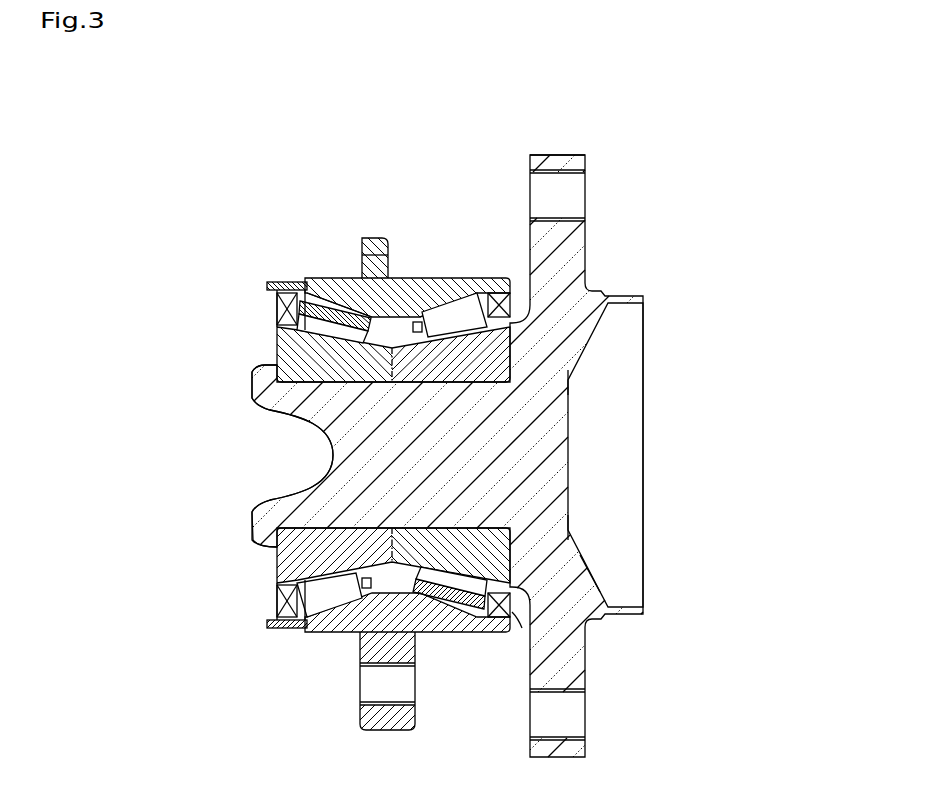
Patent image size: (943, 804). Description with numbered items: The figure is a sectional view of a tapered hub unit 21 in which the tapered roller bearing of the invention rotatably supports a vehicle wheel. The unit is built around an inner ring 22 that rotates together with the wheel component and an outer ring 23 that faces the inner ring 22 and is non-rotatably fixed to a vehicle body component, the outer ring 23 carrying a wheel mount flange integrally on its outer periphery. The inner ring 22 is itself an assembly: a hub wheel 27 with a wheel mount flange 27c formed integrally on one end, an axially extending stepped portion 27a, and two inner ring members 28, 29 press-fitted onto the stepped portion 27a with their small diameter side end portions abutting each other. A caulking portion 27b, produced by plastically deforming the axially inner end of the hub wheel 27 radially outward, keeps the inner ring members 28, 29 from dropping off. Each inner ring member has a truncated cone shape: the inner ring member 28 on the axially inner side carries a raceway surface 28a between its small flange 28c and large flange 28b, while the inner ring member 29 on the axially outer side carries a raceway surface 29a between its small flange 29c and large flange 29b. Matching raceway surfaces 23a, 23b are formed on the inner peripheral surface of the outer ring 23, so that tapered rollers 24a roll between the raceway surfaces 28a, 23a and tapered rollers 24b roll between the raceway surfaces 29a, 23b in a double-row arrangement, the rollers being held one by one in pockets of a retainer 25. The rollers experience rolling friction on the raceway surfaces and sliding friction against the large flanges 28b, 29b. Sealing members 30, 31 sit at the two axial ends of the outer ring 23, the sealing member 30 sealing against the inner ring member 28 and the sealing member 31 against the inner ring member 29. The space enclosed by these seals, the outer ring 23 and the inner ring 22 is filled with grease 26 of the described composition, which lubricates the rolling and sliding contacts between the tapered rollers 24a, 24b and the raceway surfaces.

The tapered hub unit 21 is at (240, 212).
The inner ring 22 is at (590, 248).
The outer ring 23 is at (446, 275).
The raceway surface 23a is at (320, 277).
The raceway surface 23b is at (427, 314).
The tapered roller 24a is at (320, 602).
The tapered roller 24b is at (443, 604).
The retainer 25 is at (288, 622).
The grease 26 is at (380, 568).
The hub wheel 27 is at (592, 290).
The stepped portion 27a is at (317, 383).
The caulking portion 27b is at (263, 387).
The wheel mount flange 27c is at (578, 198).
The inner ring member 28 is at (293, 358).
The raceway surface 28a is at (277, 317).
The large flange 28b is at (276, 331).
The small flange 28c is at (392, 350).
The inner ring member 29 is at (607, 343).
The raceway surface 29a is at (560, 383).
The large flange 29b is at (600, 592).
The small flange 29c is at (575, 545).
The sealing member 30 is at (278, 598).
The sealing member 31 is at (518, 625).